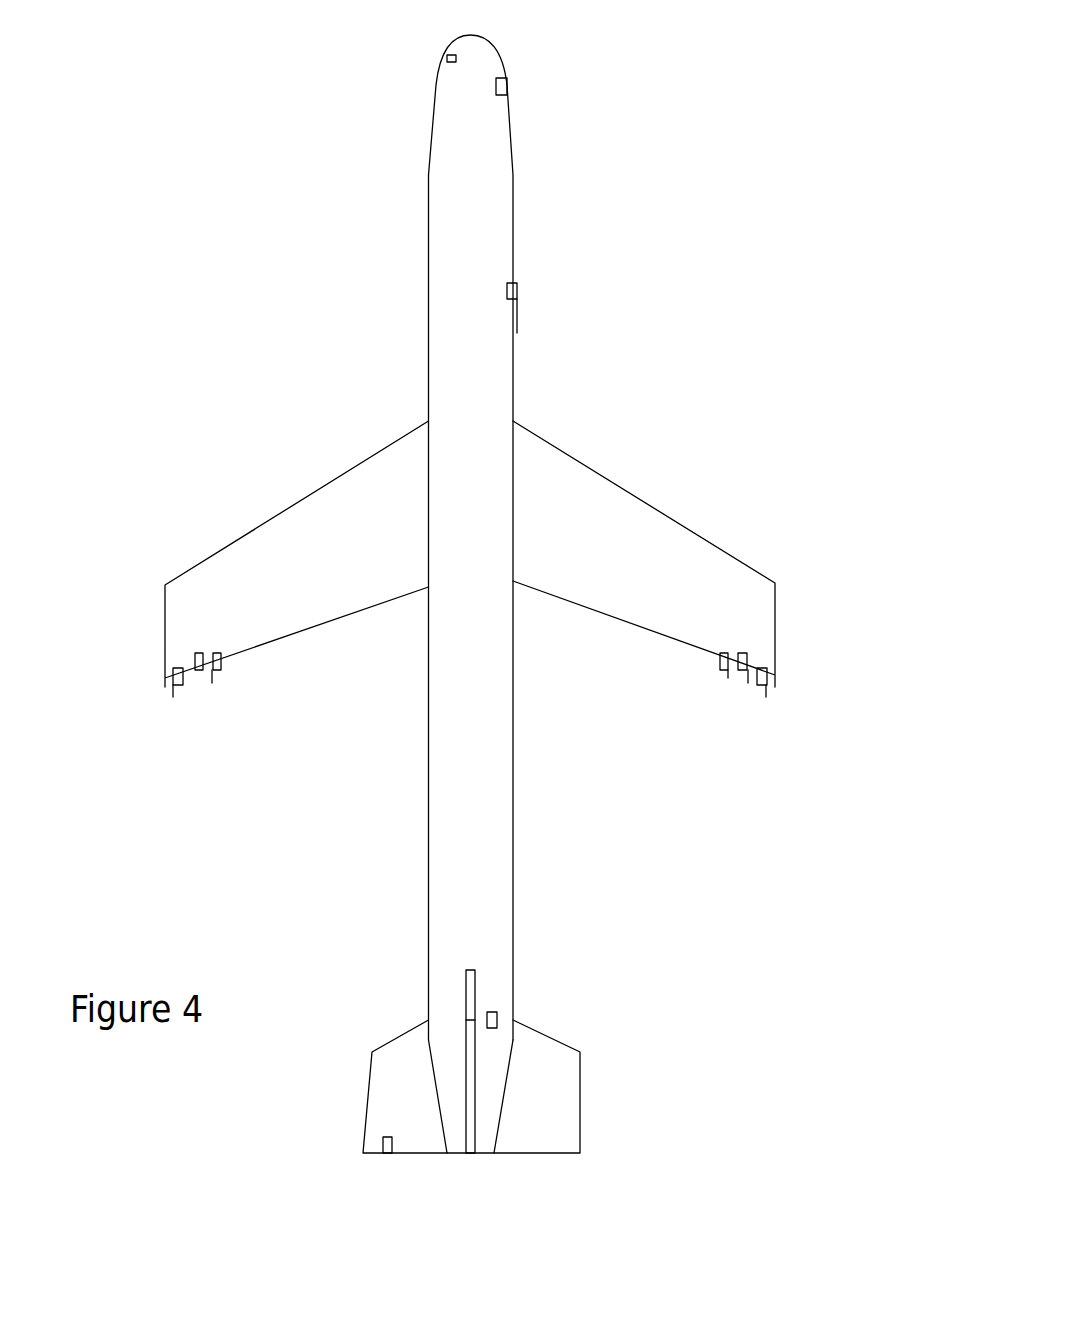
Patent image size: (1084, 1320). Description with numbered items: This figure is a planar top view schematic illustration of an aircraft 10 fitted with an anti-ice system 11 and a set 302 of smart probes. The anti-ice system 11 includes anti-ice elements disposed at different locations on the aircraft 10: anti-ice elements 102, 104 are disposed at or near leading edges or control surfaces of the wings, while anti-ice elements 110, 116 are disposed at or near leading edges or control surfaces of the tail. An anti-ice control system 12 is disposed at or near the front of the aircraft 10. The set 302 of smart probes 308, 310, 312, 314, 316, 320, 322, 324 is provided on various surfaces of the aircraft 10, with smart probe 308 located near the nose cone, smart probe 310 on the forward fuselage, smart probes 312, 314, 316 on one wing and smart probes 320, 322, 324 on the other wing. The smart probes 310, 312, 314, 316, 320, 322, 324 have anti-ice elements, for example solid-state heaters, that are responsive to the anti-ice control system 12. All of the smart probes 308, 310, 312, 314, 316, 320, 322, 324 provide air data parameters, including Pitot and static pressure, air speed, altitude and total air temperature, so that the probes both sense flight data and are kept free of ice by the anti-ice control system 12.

The aircraft 10 is at (500, 594).
The anti-ice system 11 is at (340, 262).
The anti-ice control system 12 is at (505, 80).
The anti-ice element 102 is at (178, 610).
The anti-ice element 104 is at (777, 585).
The anti-ice element 110 is at (497, 1012).
The anti-ice element 116 is at (383, 1150).
The set of smart probes 302 is at (482, 606).
The smart probe 308 is at (447, 58).
The smart probe 310 is at (518, 290).
The smart probe 312 is at (197, 652).
The smart probe 314 is at (223, 667).
The smart probe 316 is at (173, 670).
The smart probe 320 is at (720, 653).
The smart probe 322 is at (741, 673).
The smart probe 324 is at (775, 668).